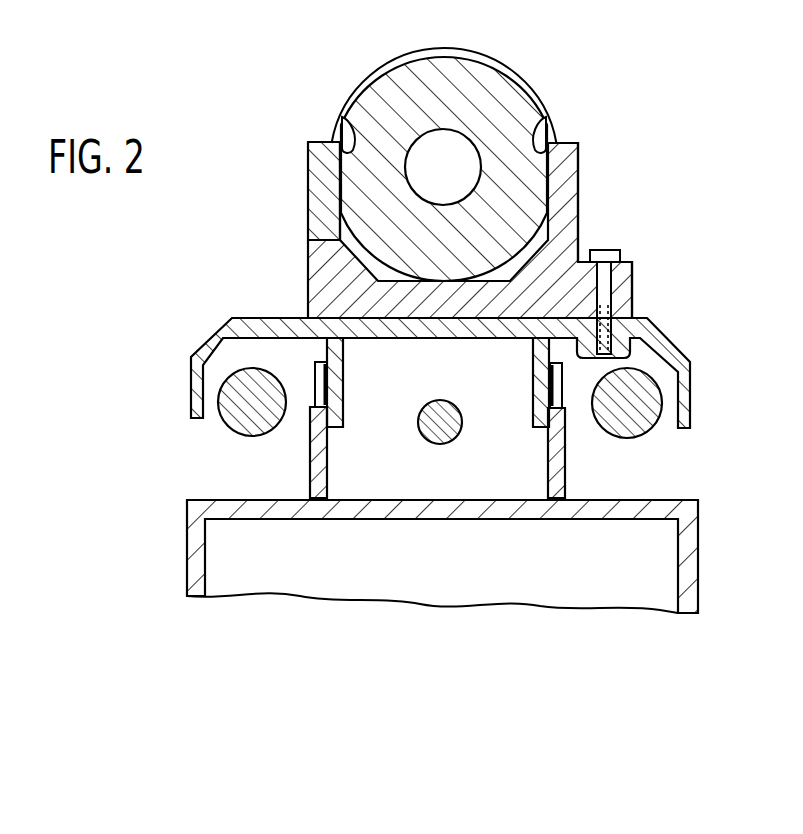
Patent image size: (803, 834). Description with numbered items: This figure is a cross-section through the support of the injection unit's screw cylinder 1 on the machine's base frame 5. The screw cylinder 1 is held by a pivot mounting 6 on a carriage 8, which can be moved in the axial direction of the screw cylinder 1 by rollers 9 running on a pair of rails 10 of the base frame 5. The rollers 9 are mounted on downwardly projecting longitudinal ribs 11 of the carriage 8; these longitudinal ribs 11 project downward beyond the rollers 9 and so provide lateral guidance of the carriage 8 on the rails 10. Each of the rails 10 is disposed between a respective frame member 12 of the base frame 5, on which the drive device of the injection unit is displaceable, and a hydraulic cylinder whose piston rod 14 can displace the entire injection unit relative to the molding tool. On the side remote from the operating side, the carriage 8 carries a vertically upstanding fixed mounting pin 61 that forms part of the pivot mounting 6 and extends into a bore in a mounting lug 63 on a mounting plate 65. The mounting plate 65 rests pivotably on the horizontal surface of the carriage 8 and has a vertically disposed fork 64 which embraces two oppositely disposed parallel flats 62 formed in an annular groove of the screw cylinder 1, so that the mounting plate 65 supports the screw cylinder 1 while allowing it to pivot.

The screw cylinder 1 is at (385, 87).
The base frame 5 is at (192, 570).
The pivot mounting 6 is at (643, 308).
The carriage 8 is at (205, 343).
The rollers 9 is at (313, 372).
The rails 10 is at (328, 462).
The longitudinal ribs 11 is at (344, 410).
The frame members 12 is at (242, 427).
The piston rod 14 is at (444, 446).
The mounting pin 61 is at (633, 281).
The parallel flats 62 is at (352, 120).
The mounting lug 63 is at (633, 264).
The fork 64 is at (583, 173).
The mounting plate 65 is at (310, 183).